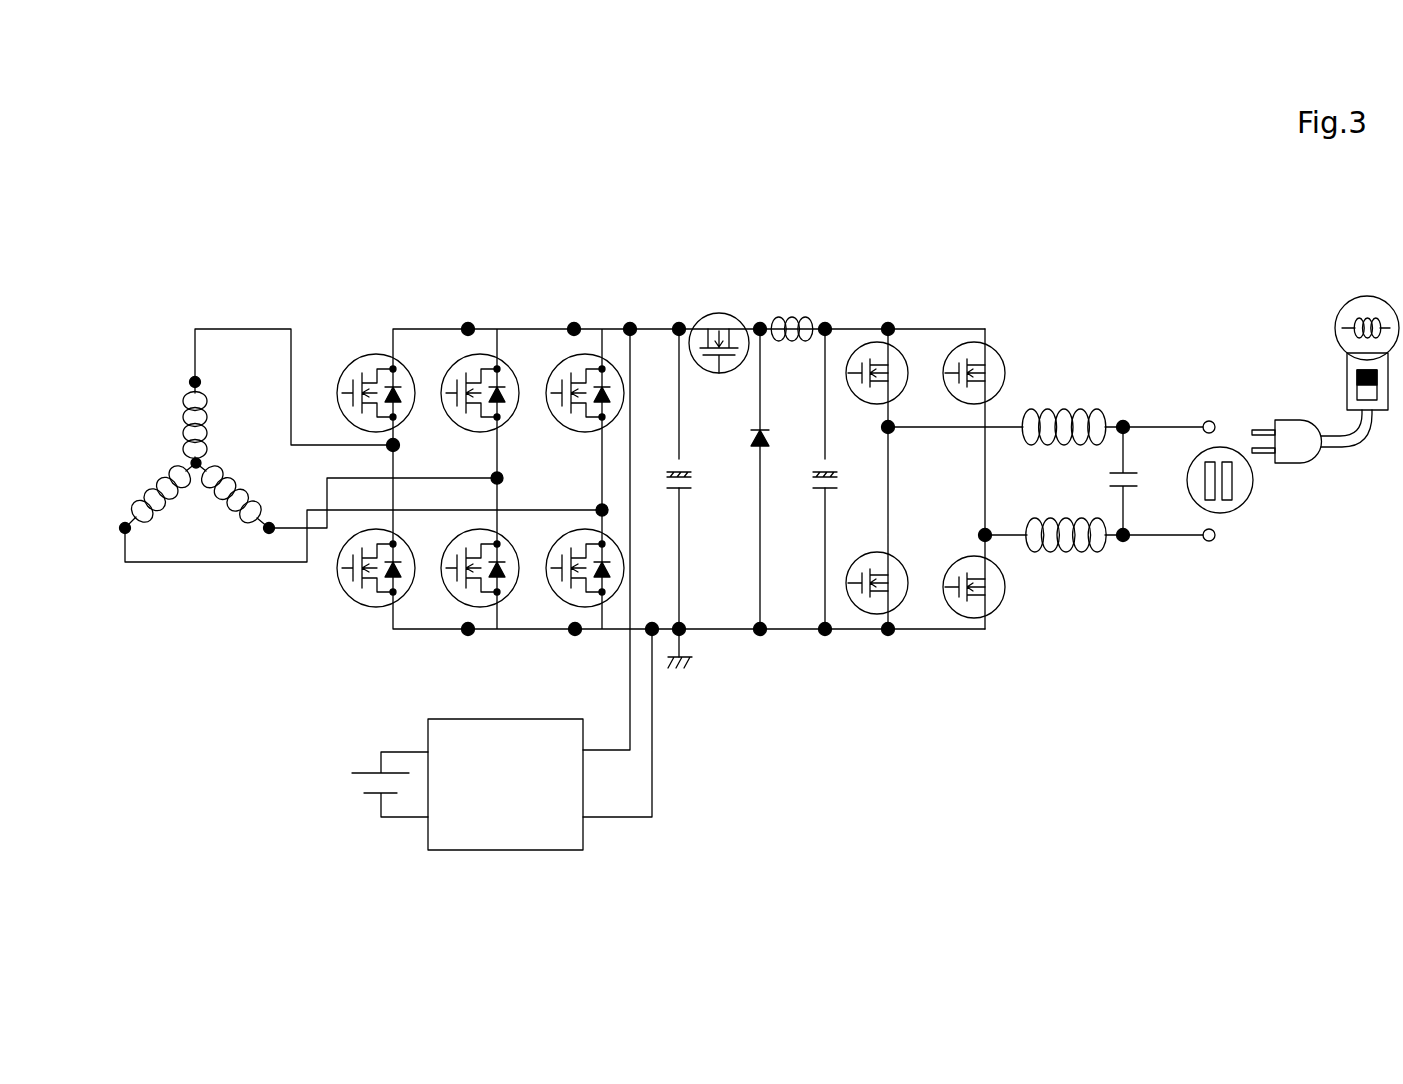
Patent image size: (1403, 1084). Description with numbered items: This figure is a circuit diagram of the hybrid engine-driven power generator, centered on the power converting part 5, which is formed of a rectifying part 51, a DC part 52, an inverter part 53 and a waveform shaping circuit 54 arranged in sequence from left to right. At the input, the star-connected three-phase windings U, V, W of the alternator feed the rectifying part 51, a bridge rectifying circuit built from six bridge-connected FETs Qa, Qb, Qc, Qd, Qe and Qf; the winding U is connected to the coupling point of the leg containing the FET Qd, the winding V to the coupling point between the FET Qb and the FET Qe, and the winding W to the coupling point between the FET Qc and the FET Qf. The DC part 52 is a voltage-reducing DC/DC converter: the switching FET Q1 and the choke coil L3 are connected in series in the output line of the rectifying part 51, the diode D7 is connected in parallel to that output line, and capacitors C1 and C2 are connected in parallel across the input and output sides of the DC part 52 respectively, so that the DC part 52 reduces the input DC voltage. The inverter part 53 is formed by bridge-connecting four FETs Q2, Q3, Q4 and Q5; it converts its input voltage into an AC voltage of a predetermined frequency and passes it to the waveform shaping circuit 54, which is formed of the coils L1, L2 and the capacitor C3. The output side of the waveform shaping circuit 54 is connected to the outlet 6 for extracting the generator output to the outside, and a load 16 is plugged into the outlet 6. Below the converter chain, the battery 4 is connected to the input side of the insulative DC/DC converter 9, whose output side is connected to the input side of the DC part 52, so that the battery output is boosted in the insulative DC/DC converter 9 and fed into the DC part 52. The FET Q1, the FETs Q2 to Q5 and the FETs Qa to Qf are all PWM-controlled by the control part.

The power converting part 5 is at (1054, 212).
The rectifying part 51 is at (617, 298).
The DC part 52 is at (812, 298).
The inverter part 53 is at (993, 298).
The waveform shaping circuit 54 is at (1081, 380).
The outlet 6 is at (1248, 503).
The load 16 is at (1335, 318).
The battery 4 is at (357, 787).
The insulative DC/DC converter 9 is at (515, 852).
The FET Qa is at (339, 581).
The FET Qb is at (444, 581).
The FET Qc is at (548, 581).
The FET Qd is at (338, 391).
The FET Qe is at (442, 391).
The FET Qf is at (547, 391).
The switching device Q1 is at (705, 369).
The FET Q2 is at (857, 397).
The FET Q3 is at (946, 392).
The FET Q4 is at (853, 562).
The FET Q5 is at (949, 566).
The diode D7 is at (754, 441).
The coil L1 is at (1050, 447).
The coil L2 is at (1093, 553).
The choke coil L3 is at (791, 342).
The capacitor C1 is at (697, 483).
The capacitor C2 is at (808, 483).
The capacitor C3 is at (1137, 480).
The 3-phase winding U is at (277, 398).
The 3-phase winding V is at (349, 498).
The 3-phase winding W is at (360, 511).